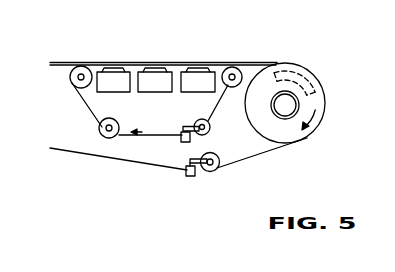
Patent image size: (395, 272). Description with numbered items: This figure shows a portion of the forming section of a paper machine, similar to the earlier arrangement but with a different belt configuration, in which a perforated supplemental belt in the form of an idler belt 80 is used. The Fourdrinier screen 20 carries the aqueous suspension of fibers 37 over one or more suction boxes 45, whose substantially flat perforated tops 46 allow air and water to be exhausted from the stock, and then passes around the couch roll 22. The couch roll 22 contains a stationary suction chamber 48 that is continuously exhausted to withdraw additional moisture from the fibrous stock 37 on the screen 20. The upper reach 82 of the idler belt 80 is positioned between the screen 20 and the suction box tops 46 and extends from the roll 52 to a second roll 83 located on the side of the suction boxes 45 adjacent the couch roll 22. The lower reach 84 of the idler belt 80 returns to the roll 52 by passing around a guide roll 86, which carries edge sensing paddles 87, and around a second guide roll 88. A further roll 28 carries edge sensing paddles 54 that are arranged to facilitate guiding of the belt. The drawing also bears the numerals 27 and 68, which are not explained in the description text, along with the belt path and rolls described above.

The Fourdrinier screen 20 is at (260, 53).
The couch roll 22 is at (313, 128).
The carrier web 27 is at (90, 157).
The roll 28 is at (211, 172).
The aqueous suspension of fibers 37 is at (51, 62).
The suction boxes 45 is at (182, 93).
The suction box tops 46 is at (113, 67).
The suction chamber 48 is at (309, 72).
The roll 52 is at (71, 79).
The edge sensing paddles 54 is at (185, 173).
The frame 68 is at (387, 25).
The idler belt 80 is at (80, 104).
The upper reach 82 is at (90, 65).
The second roll 83 is at (231, 66).
The lower reach 84 is at (125, 138).
The guide roll 86 is at (212, 129).
The edge sensing paddles 87 is at (181, 139).
The second guide roll 88 is at (100, 132).